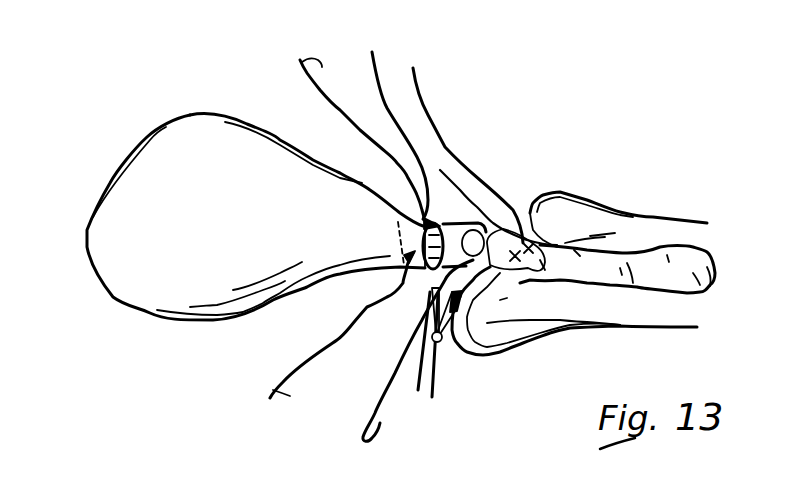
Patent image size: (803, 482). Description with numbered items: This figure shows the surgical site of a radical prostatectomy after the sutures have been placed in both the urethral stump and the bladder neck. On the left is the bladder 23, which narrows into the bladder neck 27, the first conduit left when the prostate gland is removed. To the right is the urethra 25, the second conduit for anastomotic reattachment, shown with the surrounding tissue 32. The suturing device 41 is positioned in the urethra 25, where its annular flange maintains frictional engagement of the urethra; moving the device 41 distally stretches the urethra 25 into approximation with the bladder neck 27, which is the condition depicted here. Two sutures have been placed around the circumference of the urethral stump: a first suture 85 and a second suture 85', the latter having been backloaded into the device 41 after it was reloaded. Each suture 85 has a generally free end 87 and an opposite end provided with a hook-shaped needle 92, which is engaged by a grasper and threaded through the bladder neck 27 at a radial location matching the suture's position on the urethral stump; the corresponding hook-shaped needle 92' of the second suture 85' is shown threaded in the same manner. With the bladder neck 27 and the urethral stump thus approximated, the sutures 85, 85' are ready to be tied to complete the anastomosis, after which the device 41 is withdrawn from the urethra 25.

The bladder 23 is at (152, 160).
The bladder neck 27 is at (407, 224).
The device 41 is at (463, 232).
The end 87 is at (414, 87).
The suture 85 is at (348, 143).
The needle 92 is at (319, 34).
The suture 85' is at (340, 324).
The lower wire 92' is at (299, 427).
The urethra 25 is at (617, 267).
The surrounding tissue 32 is at (487, 323).